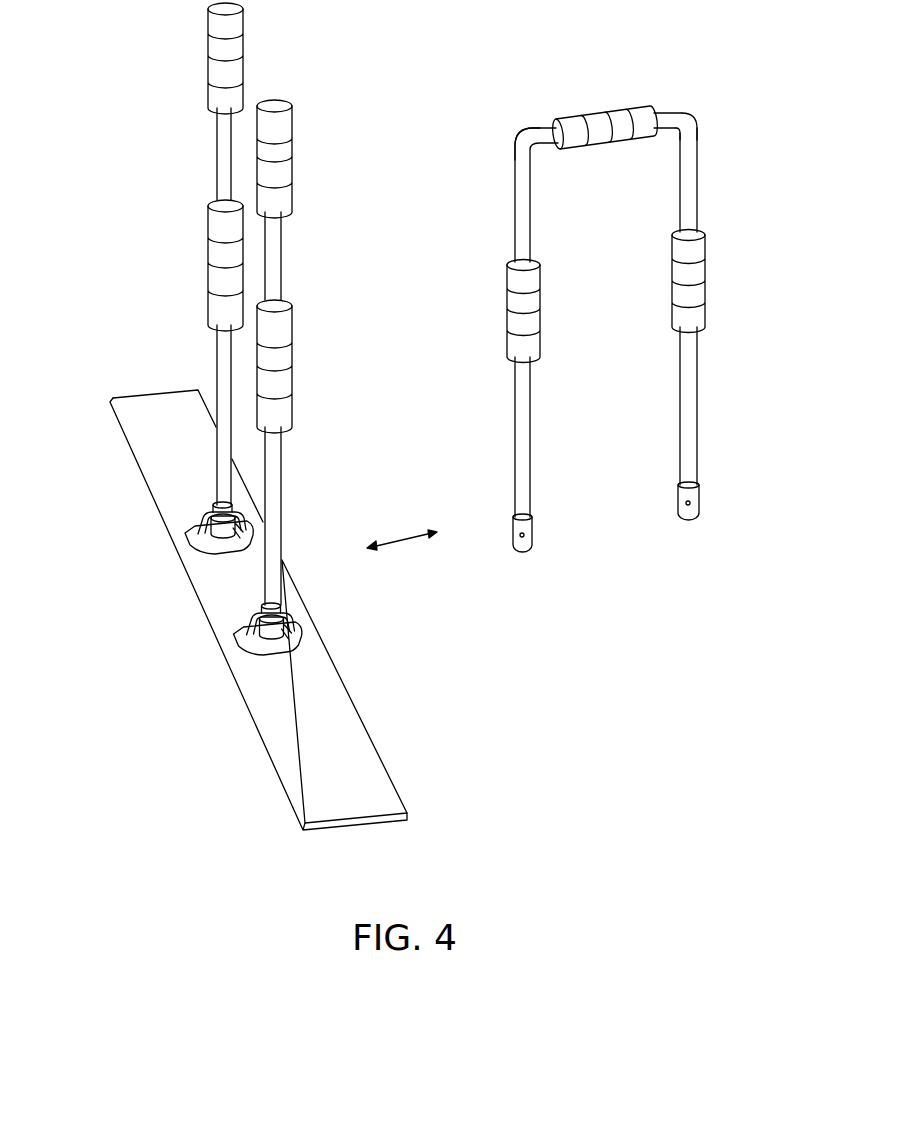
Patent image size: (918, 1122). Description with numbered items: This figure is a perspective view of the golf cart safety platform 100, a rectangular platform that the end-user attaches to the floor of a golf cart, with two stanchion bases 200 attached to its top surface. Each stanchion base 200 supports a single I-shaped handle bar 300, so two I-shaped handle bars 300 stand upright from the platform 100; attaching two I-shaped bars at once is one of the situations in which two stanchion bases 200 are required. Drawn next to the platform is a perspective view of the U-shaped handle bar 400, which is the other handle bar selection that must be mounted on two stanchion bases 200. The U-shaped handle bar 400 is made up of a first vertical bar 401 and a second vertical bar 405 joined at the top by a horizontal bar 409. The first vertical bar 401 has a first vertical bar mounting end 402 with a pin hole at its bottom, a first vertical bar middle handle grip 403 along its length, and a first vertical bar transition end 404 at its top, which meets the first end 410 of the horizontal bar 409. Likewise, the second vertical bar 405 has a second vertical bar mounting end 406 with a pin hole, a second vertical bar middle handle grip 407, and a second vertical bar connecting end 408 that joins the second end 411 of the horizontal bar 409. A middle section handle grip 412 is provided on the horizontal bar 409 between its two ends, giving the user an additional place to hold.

The safety platform 100 is at (110, 428).
The stanchion base 200 is at (180, 537).
The I-shaped handle bar 300 is at (195, 48).
The U-shaped handle bar 400 is at (641, 308).
The first vertical bar 401 is at (522, 395).
The first vertical bar mounting end 402 is at (528, 528).
The first vertical bar middle handle grip 403 is at (517, 297).
The first vertical bar transition end 404 is at (522, 152).
The second vertical bar 405 is at (687, 383).
The second vertical bar mounting end 406 is at (680, 493).
The second vertical bar middle handle grip 407 is at (690, 253).
The second vertical bar connecting end 408 is at (687, 135).
The horizontal bar 409 is at (658, 113).
The first end 410 is at (532, 127).
The second end 411 is at (672, 117).
The middle section handle grip 412 is at (593, 125).